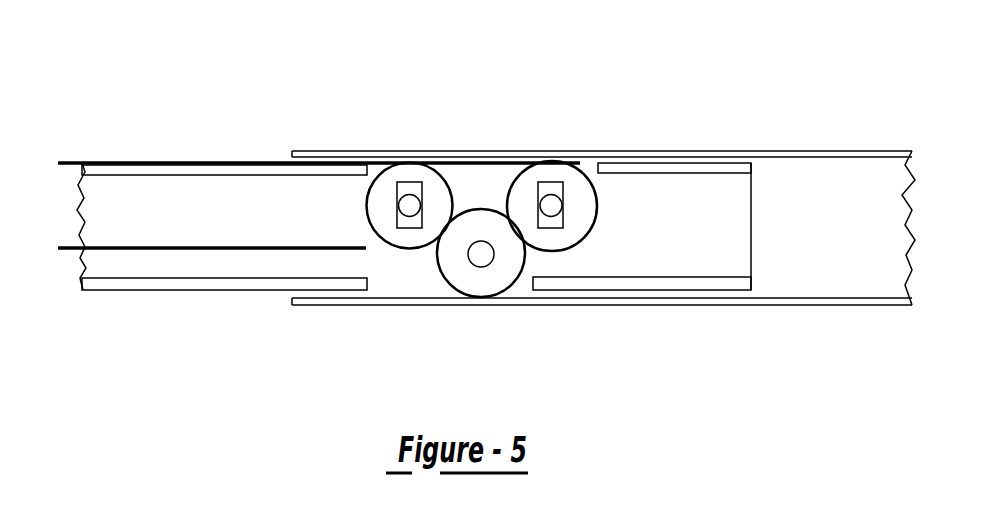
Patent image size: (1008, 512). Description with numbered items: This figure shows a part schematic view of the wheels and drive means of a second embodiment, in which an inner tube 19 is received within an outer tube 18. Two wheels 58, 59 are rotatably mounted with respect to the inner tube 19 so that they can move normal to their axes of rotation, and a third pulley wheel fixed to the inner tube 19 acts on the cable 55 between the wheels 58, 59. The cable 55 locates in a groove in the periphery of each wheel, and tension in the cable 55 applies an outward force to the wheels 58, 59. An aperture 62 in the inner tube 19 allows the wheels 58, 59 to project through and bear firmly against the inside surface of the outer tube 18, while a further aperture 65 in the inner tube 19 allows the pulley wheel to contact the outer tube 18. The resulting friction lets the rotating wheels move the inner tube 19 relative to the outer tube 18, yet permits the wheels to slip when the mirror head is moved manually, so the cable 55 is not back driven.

The outer tube 18 is at (857, 150).
The inner tube 19 is at (724, 167).
The cable 55 is at (497, 160).
The wheel 58 is at (388, 164).
The wheel 59 is at (576, 166).
The aperture 62 is at (464, 121).
The aperture 65 is at (520, 290).